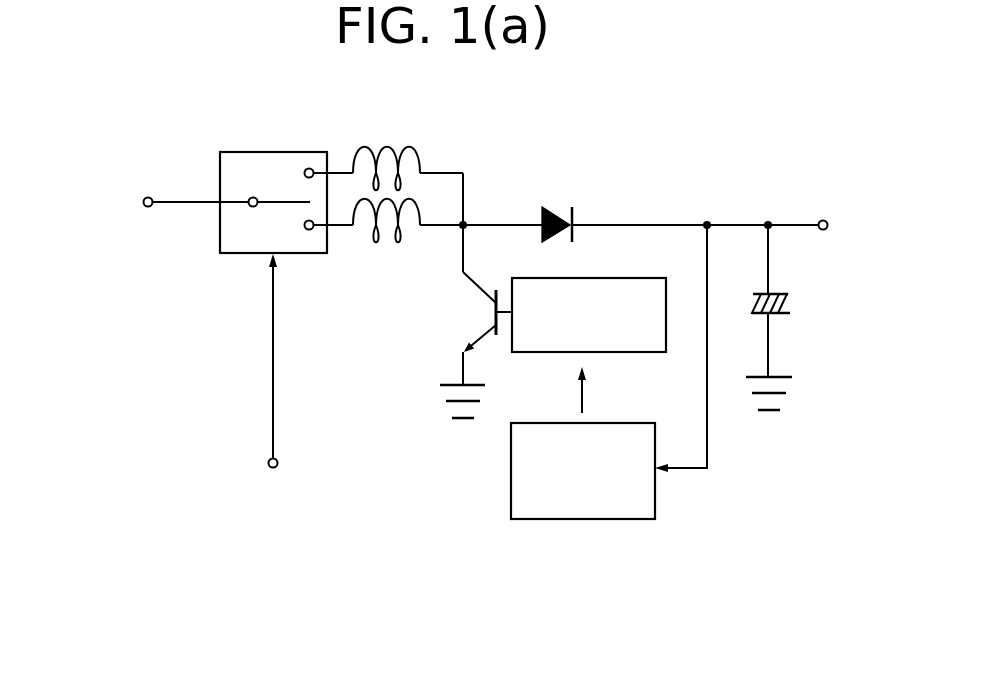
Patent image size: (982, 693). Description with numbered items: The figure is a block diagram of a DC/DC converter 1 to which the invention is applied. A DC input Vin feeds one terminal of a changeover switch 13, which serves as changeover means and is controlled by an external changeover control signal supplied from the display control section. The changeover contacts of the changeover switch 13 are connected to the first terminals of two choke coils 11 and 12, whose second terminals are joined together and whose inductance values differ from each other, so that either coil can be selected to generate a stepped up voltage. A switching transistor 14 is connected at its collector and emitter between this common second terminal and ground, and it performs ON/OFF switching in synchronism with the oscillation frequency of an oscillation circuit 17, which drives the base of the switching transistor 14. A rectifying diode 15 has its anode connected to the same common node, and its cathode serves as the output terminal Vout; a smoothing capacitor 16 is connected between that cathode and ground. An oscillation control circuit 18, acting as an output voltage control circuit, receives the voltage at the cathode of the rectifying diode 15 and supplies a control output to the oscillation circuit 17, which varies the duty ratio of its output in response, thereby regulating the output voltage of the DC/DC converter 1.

The DC/DC converter 1 is at (186, 345).
The choke coil 11 is at (355, 162).
The choke coil 12 is at (427, 190).
The changeover switch 13 is at (268, 152).
The switching transistor 14 is at (470, 322).
The rectifying diode 15 is at (556, 207).
The smoothing capacitor 16 is at (808, 297).
The oscillation circuit 17 is at (557, 352).
The oscillation control circuit 18 is at (511, 497).